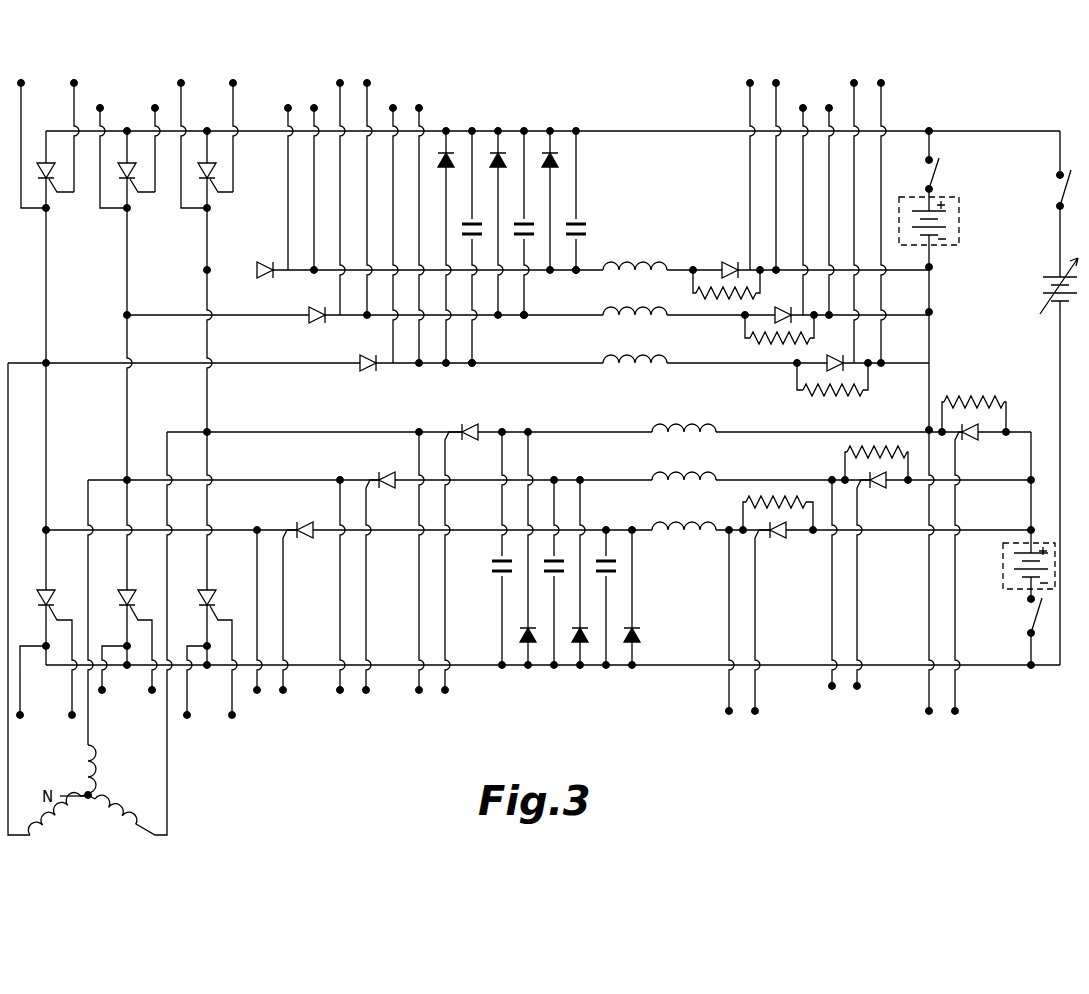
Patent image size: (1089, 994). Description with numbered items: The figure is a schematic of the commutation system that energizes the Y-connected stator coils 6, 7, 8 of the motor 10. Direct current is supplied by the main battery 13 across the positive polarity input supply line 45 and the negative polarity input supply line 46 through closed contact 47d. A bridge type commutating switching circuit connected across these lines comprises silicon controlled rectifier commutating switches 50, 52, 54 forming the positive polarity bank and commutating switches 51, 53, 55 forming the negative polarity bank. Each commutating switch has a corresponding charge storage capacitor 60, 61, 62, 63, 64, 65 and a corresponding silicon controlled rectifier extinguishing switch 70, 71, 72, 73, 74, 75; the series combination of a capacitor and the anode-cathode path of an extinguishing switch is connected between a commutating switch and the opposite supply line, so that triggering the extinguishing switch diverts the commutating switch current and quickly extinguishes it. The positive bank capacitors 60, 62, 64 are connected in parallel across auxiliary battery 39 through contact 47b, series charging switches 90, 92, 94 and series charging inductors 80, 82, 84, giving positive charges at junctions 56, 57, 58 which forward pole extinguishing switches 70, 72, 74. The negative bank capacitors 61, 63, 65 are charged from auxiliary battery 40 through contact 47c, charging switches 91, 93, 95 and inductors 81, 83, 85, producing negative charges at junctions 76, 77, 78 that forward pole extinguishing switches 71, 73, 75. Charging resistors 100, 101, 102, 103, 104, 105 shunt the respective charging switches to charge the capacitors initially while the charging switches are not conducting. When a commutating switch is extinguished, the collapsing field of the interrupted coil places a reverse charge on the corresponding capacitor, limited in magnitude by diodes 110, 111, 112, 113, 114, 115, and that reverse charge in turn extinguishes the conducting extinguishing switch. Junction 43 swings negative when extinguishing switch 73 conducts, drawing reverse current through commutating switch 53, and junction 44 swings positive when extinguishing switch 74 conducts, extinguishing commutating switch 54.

The motor 10 is at (124, 848).
The stator coil 6 is at (110, 815).
The stator coil 7 is at (50, 832).
The stator coil 8 is at (95, 771).
The battery 13 is at (1043, 281).
The battery 39 is at (1003, 568).
The battery 40 is at (950, 222).
The junction 43 is at (130, 314).
The junction 44 is at (211, 431).
The positive polarity input supply line 45 is at (652, 130).
The negative polarity input supply line 46 is at (663, 668).
The contact of switch 47 47b is at (1028, 627).
The contact of switch 47 47c is at (938, 172).
The contact of switch 47 47d is at (1063, 200).
The silicon controlled rectifier commutating switch 50 is at (42, 166).
The silicon controlled rectifier commutating switch 51 is at (42, 600).
The silicon controlled rectifier commutating switch 52 is at (122, 170).
The silicon controlled rectifier commutating switch 53 is at (122, 600).
The silicon controlled rectifier commutating switch 54 is at (202, 170).
The silicon controlled rectifier commutating switch 55 is at (202, 600).
The junction 56 is at (632, 528).
The junction 57 is at (580, 478).
The junction 58 is at (528, 430).
The capacitor 60 is at (603, 568).
The capacitor 61 is at (466, 228).
The capacitor 62 is at (550, 568).
The capacitor 63 is at (518, 228).
The capacitor 64 is at (495, 565).
The capacitor 65 is at (583, 233).
The silicon controlled rectifier extinguishing switch 70 is at (304, 522).
The silicon controlled rectifier extinguishing switch 71 is at (368, 355).
The silicon controlled rectifier extinguishing switch 72 is at (386, 472).
The silicon controlled rectifier extinguishing switch 73 is at (317, 307).
The silicon controlled rectifier extinguishing switch 74 is at (470, 424).
The silicon controlled rectifier extinguishing switch 75 is at (265, 262).
The junction 76 is at (473, 364).
The junction 77 is at (525, 316).
The junction 78 is at (576, 271).
The charging inductor 80 is at (672, 528).
The charging inductor 81 is at (628, 362).
The charging inductor 82 is at (672, 478).
The charging inductor 83 is at (620, 313).
The charging inductor 84 is at (672, 430).
The charging inductor 85 is at (638, 268).
The silicon controlled rectifier charging switch 90 is at (780, 537).
The silicon controlled rectifier charging switch 91 is at (838, 355).
The silicon controlled rectifier charging switch 92 is at (876, 486).
The silicon controlled rectifier charging switch 93 is at (785, 307).
The silicon controlled rectifier charging switch 94 is at (965, 438).
The silicon controlled rectifier charging switch 95 is at (730, 262).
The charging resistor 100 is at (765, 500).
The charging resistor 101 is at (820, 398).
The charging resistor 102 is at (862, 451).
The charging resistor 103 is at (765, 342).
The charging resistor 104 is at (975, 398).
The charging resistor 105 is at (722, 296).
The diode 110 is at (640, 640).
The diode 111 is at (452, 155).
The diode 112 is at (580, 645).
The diode 113 is at (504, 155).
The diode 114 is at (526, 645).
The diode 115 is at (556, 155).